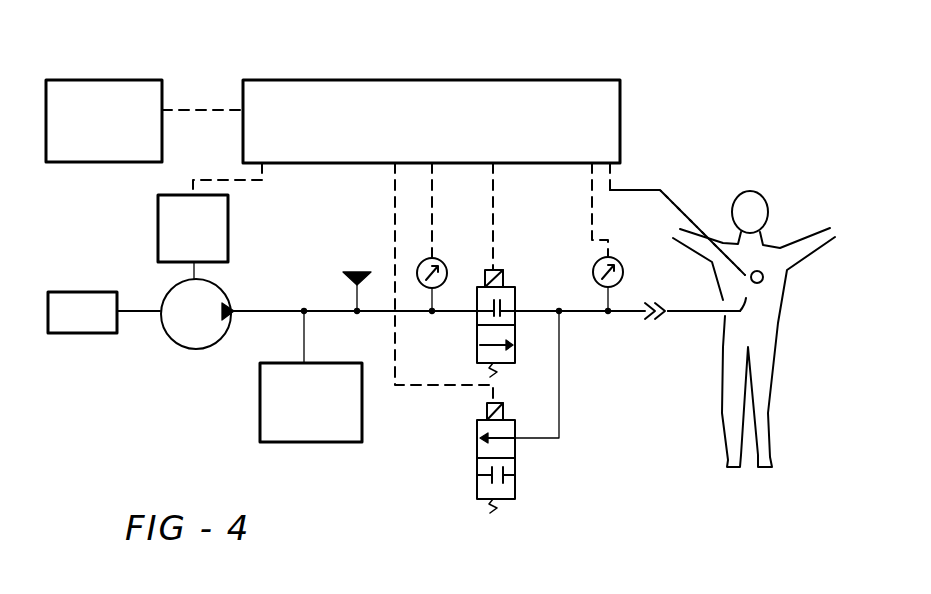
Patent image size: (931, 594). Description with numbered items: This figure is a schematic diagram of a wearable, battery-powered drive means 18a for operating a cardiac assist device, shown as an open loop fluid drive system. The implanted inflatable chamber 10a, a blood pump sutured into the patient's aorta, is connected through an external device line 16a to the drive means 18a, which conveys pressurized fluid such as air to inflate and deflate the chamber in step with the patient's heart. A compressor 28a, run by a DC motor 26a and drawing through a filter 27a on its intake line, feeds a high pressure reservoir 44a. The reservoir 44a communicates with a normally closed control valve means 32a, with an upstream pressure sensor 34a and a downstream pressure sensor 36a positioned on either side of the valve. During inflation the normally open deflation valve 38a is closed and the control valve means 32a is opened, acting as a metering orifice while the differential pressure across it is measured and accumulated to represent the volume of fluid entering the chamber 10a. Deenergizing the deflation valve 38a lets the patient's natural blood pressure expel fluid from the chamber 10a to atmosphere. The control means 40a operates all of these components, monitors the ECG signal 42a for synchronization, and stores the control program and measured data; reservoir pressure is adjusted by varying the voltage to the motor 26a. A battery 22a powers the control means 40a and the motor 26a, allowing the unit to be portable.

The inflatable chamber 10a is at (765, 283).
The external device line 16a is at (697, 310).
The wearable battery-powered drive means 18a is at (682, 92).
The battery 22a is at (108, 80).
The motor 26a is at (158, 238).
The filter 27a is at (85, 334).
The compressor 28a is at (206, 350).
The control valve means 32a is at (503, 282).
The upstream pressure sensor 34a is at (442, 263).
The downstream pressure sensor 36a is at (618, 265).
The deflation valve 38a is at (515, 485).
The control means 40a is at (437, 45).
The ECG signal 42a is at (633, 190).
The high pressure reservoir 44a is at (362, 432).